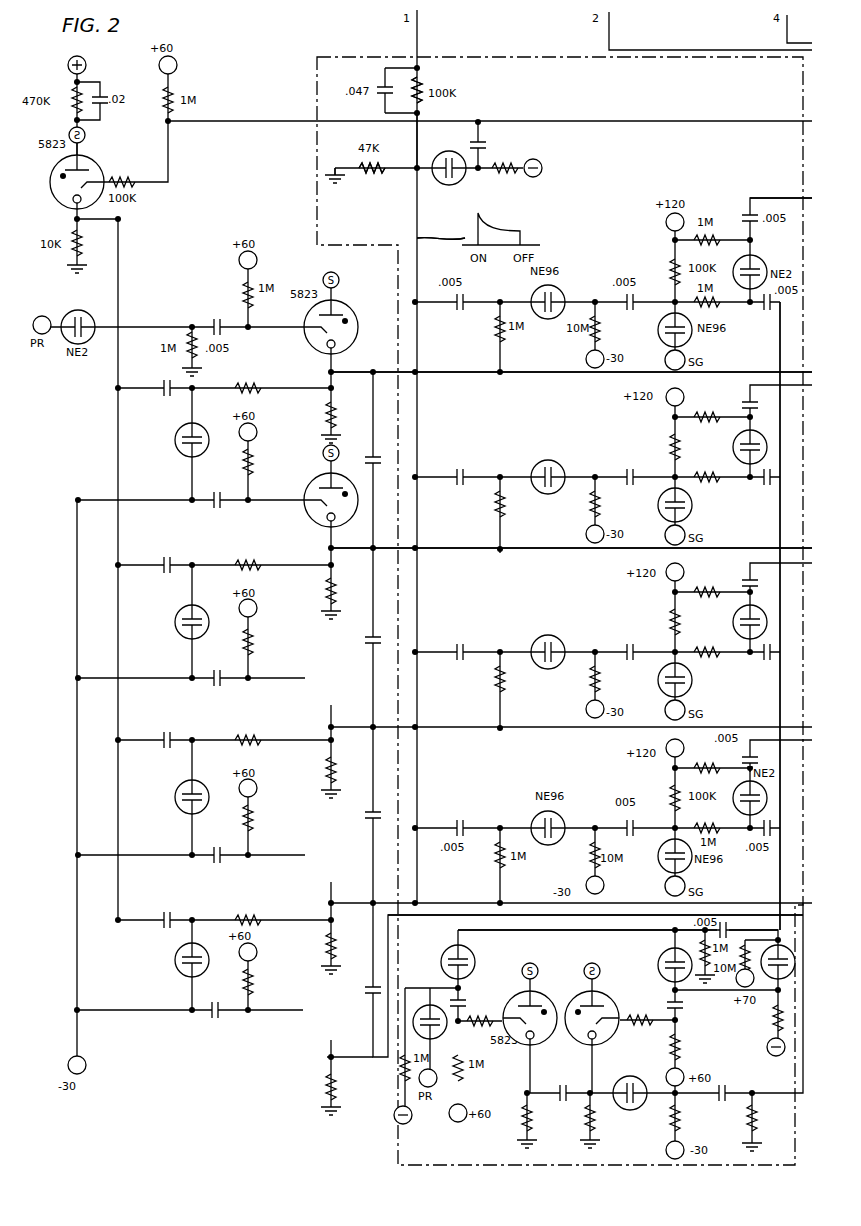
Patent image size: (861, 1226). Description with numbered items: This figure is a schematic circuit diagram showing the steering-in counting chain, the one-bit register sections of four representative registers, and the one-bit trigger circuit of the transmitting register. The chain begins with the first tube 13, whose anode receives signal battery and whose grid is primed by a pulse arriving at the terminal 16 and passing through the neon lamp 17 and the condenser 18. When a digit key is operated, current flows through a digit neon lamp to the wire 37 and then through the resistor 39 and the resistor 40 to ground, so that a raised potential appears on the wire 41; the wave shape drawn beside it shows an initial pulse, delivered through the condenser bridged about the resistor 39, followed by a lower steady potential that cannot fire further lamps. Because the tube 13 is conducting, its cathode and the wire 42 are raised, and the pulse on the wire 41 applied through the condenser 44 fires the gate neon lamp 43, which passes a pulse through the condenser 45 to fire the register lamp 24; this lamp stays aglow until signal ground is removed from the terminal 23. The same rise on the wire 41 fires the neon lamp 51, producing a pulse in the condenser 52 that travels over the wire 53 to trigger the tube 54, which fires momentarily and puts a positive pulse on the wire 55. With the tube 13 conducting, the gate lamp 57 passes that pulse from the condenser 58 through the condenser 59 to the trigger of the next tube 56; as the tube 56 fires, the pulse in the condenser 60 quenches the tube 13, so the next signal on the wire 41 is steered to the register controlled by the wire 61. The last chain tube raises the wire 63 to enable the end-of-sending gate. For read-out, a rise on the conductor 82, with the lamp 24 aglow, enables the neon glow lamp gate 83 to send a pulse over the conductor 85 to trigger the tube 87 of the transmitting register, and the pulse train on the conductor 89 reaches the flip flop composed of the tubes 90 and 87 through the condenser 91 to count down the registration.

The first tube 13 is at (350, 316).
The terminal 16 is at (48, 316).
The neon lamp 17 is at (93, 318).
The condenser 18 is at (222, 318).
The terminal 23 is at (684, 365).
The lamp 24 is at (690, 336).
The wire 37 is at (419, 35).
The resistor 39 is at (420, 82).
The resistor 40 is at (383, 172).
The wire 41 is at (417, 218).
The wire 42 is at (440, 372).
The neon lamp 43 is at (548, 320).
The condenser 44 is at (460, 313).
The condenser 45 is at (632, 313).
The neon lamp 51 is at (449, 186).
The condenser 52 is at (487, 152).
The wire 53 is at (210, 122).
The tube 54 is at (95, 160).
The wire 55 is at (119, 250).
The tube 56 is at (305, 490).
The gate lamp 57 is at (175, 445).
The condenser 58 is at (158, 380).
The condenser 59 is at (222, 490).
The condenser 60 is at (370, 458).
The wire 61 is at (478, 549).
The wire 63 is at (415, 922).
The conductor 82 is at (750, 198).
The neon glow lamp gate 83 is at (758, 258).
The conductor 85 is at (780, 522).
The tube 87 is at (600, 1000).
The conductor 89 is at (755, 930).
The tube 90 is at (510, 998).
The condenser 91 is at (725, 915).